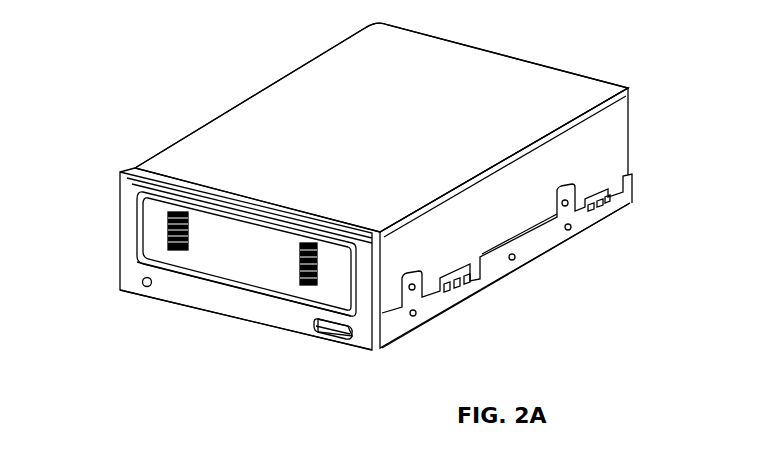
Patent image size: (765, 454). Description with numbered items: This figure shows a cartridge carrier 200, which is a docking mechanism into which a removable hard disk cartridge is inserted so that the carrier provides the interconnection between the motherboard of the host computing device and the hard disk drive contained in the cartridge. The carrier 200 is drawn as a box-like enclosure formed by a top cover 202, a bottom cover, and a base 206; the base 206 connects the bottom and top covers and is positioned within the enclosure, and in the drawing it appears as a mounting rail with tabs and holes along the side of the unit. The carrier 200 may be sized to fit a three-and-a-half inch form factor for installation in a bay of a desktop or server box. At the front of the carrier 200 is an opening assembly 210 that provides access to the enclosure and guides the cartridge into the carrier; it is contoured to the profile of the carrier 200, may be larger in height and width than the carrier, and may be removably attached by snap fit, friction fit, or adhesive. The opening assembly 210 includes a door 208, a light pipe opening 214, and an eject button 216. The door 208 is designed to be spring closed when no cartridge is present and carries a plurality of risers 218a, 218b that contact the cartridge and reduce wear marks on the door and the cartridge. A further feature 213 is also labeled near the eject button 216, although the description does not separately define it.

The cartridge carrier 200 is at (152, 58).
The top cover 202 is at (404, 131).
The base 206 is at (531, 242).
The door 208 is at (157, 238).
The opening assembly 210 is at (224, 299).
The button recess 213 is at (345, 337).
The light pipe opening 214 is at (140, 283).
The eject button 216 is at (318, 333).
The riser 218a is at (167, 232).
The riser 218b is at (318, 272).